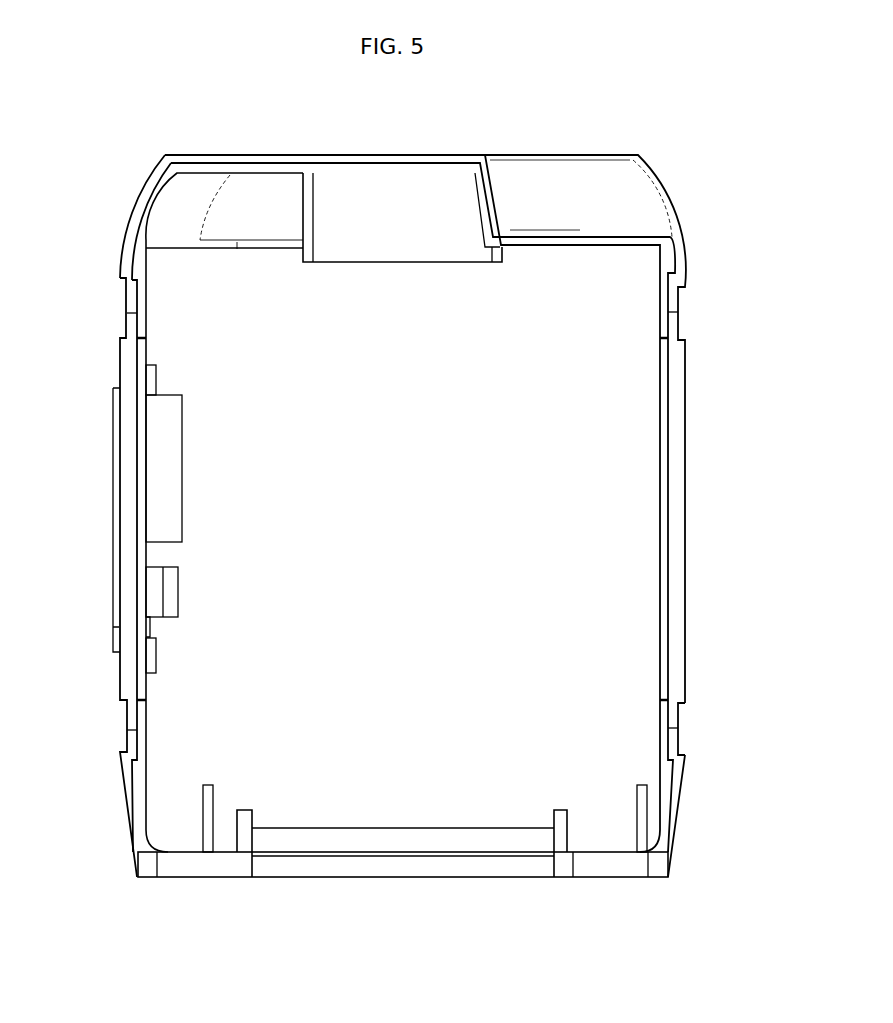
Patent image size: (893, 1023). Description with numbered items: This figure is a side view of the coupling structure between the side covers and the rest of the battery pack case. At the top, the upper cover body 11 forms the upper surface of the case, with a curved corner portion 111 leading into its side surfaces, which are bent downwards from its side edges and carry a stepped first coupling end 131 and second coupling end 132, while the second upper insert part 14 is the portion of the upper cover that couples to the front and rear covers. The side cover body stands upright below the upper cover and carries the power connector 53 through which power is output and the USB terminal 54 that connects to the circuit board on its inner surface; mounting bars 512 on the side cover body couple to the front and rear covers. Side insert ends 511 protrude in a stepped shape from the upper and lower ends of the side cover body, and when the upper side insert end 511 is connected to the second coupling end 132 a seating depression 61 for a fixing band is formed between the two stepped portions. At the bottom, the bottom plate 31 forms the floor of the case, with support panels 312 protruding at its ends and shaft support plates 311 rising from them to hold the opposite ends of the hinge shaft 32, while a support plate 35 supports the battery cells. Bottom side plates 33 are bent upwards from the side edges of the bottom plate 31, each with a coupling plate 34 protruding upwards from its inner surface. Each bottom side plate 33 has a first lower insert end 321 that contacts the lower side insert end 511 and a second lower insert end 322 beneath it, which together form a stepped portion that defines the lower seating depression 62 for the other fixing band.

The upper cover body 11 is at (310, 155).
The curved corner portion of housing 111 is at (133, 195).
The second upper insert part 14 is at (458, 172).
The first coupling end 131 is at (148, 327).
The second coupling end 132 is at (120, 297).
The side insert end 511 is at (126, 324).
The mounting bar 512 is at (140, 407).
The power connector 53 is at (160, 467).
The USB terminal 54 is at (177, 590).
The seating depression 61 is at (684, 312).
The seating depression 62 is at (690, 728).
The bottom side plate 33 is at (688, 815).
The first lower insert end 321 is at (125, 742).
The second lower insert end 322 is at (120, 752).
The coupling plate 34 is at (147, 733).
The support plate 35 is at (214, 797).
The bottom plate 31 is at (287, 878).
The shaft support plate 311 is at (570, 828).
The support panel 312 is at (622, 868).
The hinge shaft 32 is at (386, 848).